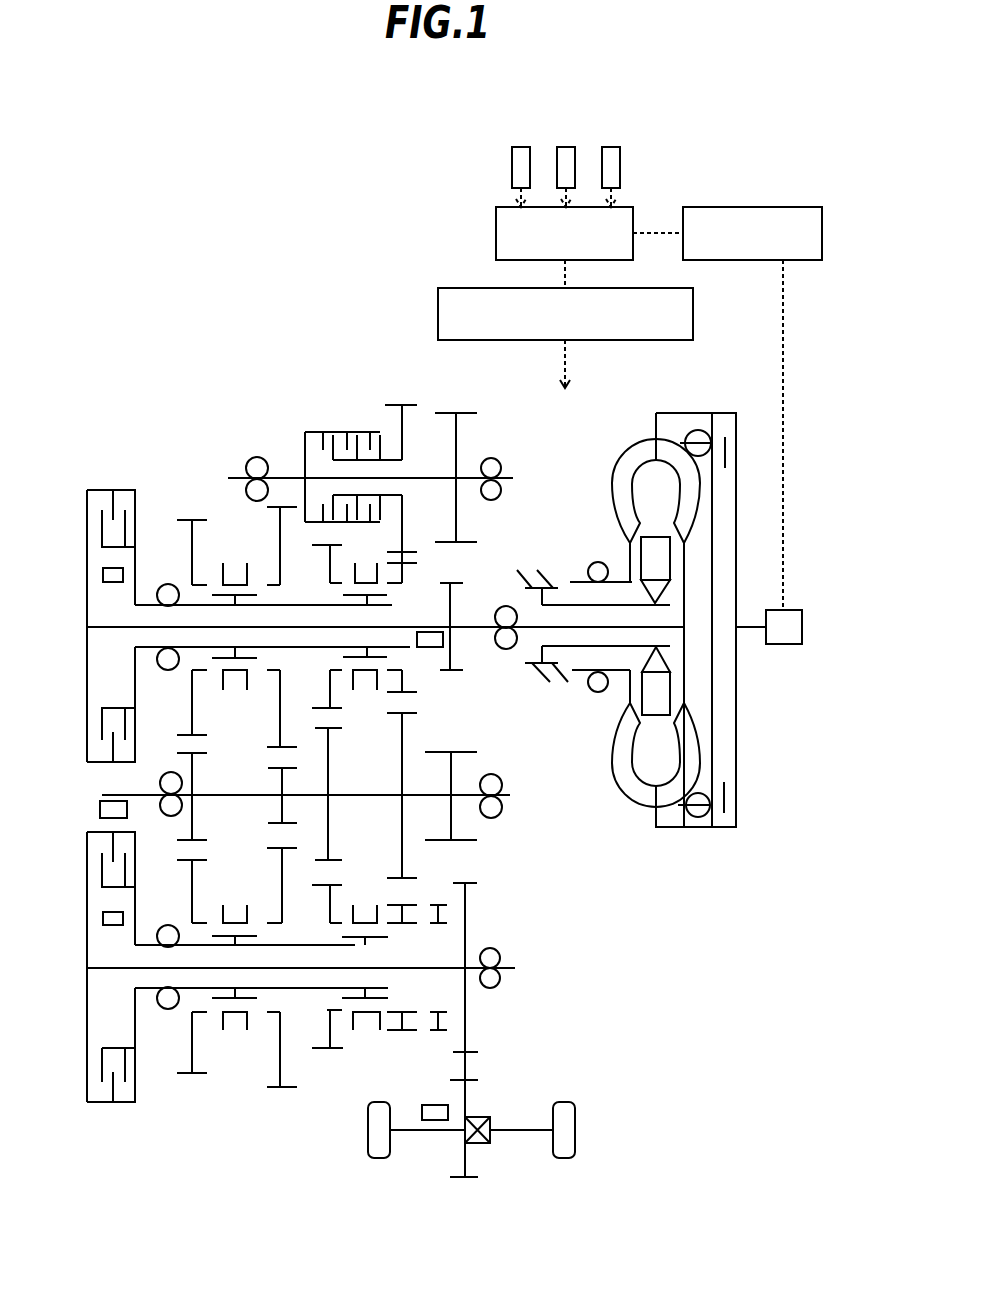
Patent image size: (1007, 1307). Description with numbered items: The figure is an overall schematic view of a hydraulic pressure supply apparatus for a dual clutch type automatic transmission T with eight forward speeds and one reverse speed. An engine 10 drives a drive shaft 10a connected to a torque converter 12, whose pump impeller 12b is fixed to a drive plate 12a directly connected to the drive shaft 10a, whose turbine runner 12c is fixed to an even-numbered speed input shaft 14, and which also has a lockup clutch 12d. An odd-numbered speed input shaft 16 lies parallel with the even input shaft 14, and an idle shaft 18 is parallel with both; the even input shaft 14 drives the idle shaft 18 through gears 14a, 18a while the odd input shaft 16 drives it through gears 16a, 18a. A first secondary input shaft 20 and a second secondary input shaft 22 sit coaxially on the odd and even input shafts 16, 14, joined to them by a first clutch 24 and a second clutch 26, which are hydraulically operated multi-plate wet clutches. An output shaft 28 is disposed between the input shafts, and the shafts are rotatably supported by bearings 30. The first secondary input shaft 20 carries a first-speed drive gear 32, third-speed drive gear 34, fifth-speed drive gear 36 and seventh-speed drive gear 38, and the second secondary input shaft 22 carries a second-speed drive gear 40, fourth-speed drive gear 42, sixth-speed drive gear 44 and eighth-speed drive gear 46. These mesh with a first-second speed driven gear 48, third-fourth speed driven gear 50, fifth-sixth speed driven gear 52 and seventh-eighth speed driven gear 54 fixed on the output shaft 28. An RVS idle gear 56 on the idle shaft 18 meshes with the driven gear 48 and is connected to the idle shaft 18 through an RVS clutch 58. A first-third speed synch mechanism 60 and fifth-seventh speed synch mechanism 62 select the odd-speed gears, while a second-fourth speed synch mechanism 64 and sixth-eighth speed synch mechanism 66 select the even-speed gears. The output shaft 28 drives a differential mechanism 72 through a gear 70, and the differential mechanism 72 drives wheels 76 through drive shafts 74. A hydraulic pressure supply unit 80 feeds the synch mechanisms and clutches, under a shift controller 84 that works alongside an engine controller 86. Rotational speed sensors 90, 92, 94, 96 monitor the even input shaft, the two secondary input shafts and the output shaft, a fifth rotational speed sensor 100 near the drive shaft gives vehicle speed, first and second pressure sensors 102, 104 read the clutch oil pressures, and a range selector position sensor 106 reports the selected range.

The transmission T is at (143, 394).
The engine 10 is at (798, 610).
The drive shaft 10a is at (745, 630).
The torque converter 12 is at (652, 607).
The drive plate 12a is at (700, 413).
The pump impeller 12b is at (628, 455).
The turbine runner 12c is at (697, 738).
The lockup clutch 12d is at (710, 818).
The even-numbered speed input shaft 14 is at (482, 627).
The gear 14a is at (452, 670).
The odd-numbered speed input shaft 16 is at (508, 965).
The gear 16a is at (472, 885).
The idle shaft 18 is at (507, 470).
The gear 18a is at (470, 543).
The first secondary input shaft 20 is at (355, 945).
The second secondary input shaft 22 is at (392, 605).
The first clutch 24 is at (122, 1102).
The second clutch 26 is at (120, 490).
The output shaft 28 is at (505, 792).
The bearings 30 is at (170, 583).
The first-speed drive gear 32 is at (403, 904).
The third-speed drive gear 34 is at (327, 887).
The fifth-speed drive gear 36 is at (185, 863).
The seventh-speed drive gear 38 is at (275, 850).
The second-speed drive gear 40 is at (405, 692).
The fourth-speed drive gear 42 is at (320, 712).
The sixth-speed drive gear 44 is at (190, 730).
The eighth-speed drive gear 46 is at (275, 747).
The first-second speed driven gear 48 is at (405, 715).
The third-fourth speed driven gear 50 is at (332, 730).
The fifth-sixth speed driven gear 52 is at (197, 757).
The seventh-eighth speed driven gear 54 is at (287, 770).
The RVS idle gear 56 is at (402, 405).
The RVS clutch 58 is at (313, 432).
The first-third speed synch mechanism 60 is at (365, 1022).
The fifth-seventh speed synch mechanism 62 is at (235, 1022).
The second-fourth speed synch mechanism 64 is at (366, 572).
The sixth-eighth speed synch mechanism 66 is at (235, 570).
The gear 70 is at (478, 1080).
The differential mechanism 72 is at (478, 1117).
The drive shafts 74 is at (427, 1132).
The wheels 76 is at (368, 1125).
The hydraulic pressure supply unit 80 is at (478, 287).
The shift controller 84 is at (496, 218).
The engine controller 86 is at (725, 207).
The first rotational speed sensor 90 is at (427, 647).
The second rotational speed sensor 92 is at (113, 584).
The third rotational speed sensor 94 is at (114, 926).
The fourth rotational speed sensor 96 is at (98, 806).
The fifth rotational speed sensor 100 is at (437, 1105).
The first pressure sensor 102 is at (521, 145).
The second pressure sensor 104 is at (566, 145).
The range selector position sensor 106 is at (611, 145).